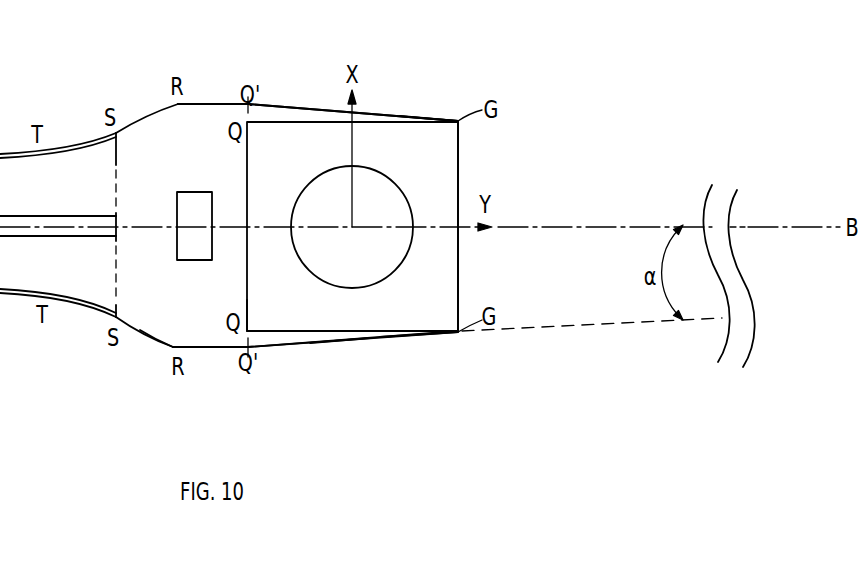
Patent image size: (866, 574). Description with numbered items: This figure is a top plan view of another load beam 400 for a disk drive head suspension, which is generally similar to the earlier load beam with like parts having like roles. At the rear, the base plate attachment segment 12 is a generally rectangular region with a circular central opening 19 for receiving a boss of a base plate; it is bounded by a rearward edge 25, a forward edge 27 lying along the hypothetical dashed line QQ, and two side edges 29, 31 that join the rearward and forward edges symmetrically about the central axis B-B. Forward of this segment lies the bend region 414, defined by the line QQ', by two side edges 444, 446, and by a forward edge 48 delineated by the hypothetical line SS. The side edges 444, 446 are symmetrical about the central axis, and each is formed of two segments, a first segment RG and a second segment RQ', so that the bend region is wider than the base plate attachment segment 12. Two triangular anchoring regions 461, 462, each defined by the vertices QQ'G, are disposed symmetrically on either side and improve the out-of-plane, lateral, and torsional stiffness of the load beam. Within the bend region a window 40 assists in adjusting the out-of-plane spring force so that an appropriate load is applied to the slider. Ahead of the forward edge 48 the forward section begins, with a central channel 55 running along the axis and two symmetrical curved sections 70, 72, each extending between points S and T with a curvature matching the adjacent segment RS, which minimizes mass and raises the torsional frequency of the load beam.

The load beam 400 is at (396, 60).
The rearward edge 25 is at (458, 155).
The circular central opening 19 is at (370, 166).
The base plate attachment segment 12 is at (337, 315).
The forward edge 27 is at (249, 303).
The side edge 29 is at (389, 336).
The side edge 31 is at (424, 119).
The triangular anchoring region 461 is at (286, 114).
The triangular anchoring region 462 is at (293, 338).
The window 40 is at (193, 190).
The side edge 446 is at (142, 112).
The side edge 444 is at (155, 338).
The bend region 414 is at (141, 336).
The curved section 72 is at (72, 148).
The forward edge 48 is at (115, 167).
The curved section 70 is at (70, 306).
The central channel 55 is at (7, 213).